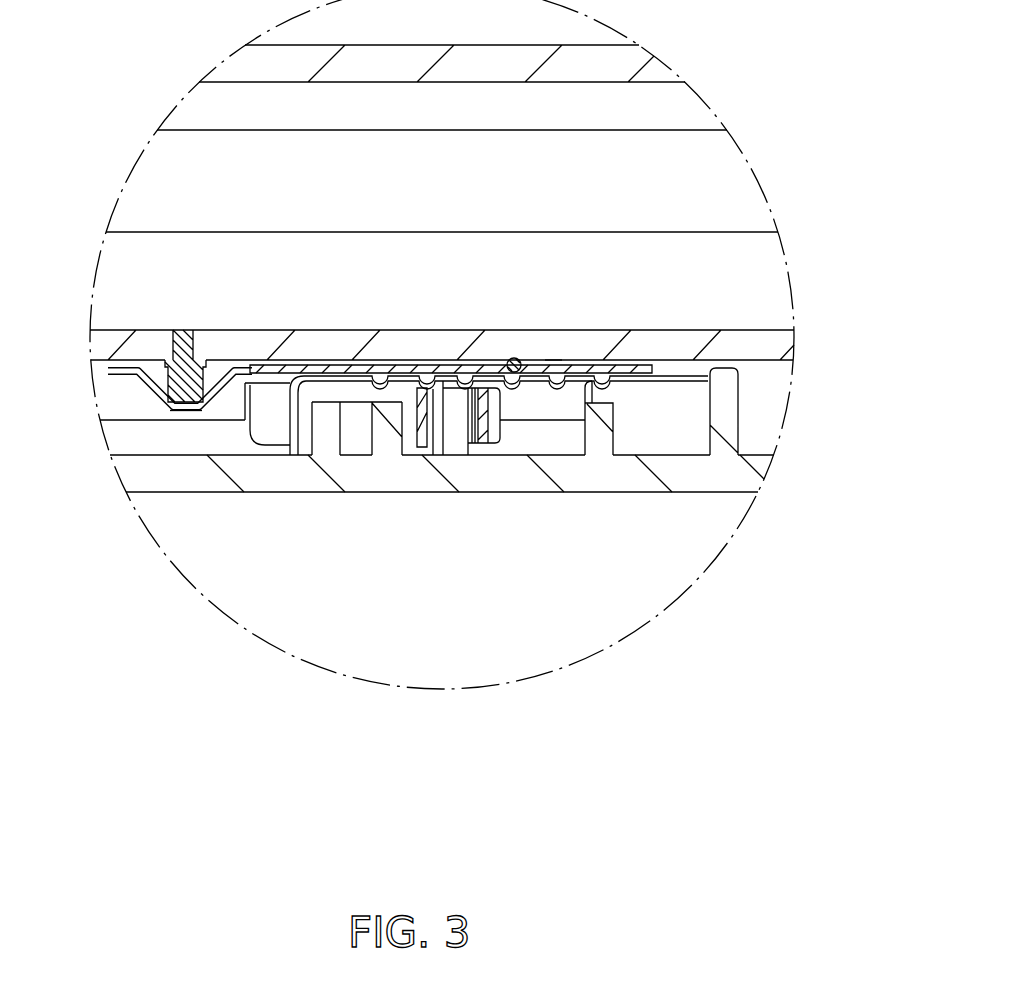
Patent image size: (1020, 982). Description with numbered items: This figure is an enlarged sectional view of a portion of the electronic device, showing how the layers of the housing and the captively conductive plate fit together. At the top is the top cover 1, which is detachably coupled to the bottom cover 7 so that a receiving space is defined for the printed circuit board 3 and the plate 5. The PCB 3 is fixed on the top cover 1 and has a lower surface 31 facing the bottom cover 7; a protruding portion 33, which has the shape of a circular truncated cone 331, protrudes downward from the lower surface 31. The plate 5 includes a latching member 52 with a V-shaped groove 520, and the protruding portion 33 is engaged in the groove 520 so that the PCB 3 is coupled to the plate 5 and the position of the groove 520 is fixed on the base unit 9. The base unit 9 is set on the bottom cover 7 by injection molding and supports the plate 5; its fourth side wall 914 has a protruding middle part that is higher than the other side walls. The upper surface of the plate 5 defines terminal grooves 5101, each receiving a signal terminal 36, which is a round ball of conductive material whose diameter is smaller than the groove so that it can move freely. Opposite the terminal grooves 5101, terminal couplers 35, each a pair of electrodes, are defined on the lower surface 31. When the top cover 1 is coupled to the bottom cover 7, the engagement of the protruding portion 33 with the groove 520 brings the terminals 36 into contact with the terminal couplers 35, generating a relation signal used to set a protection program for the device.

The top cover 1 is at (607, 57).
The printed circuit board 3 is at (766, 341).
The lower surface 31 is at (769, 362).
The protruding portion 33 is at (177, 370).
The circular truncated cone 331 is at (162, 395).
The terminal coupler 35 is at (553, 360).
The signal terminal 36 is at (518, 360).
The captively conductive plate 5 is at (265, 374).
The latching member 52 is at (118, 369).
The V-shaped groove 520 is at (183, 411).
The terminal groove 5101 is at (572, 381).
The bottom cover 7 is at (732, 467).
The base unit 9 is at (324, 442).
The fourth side wall 914 is at (732, 408).